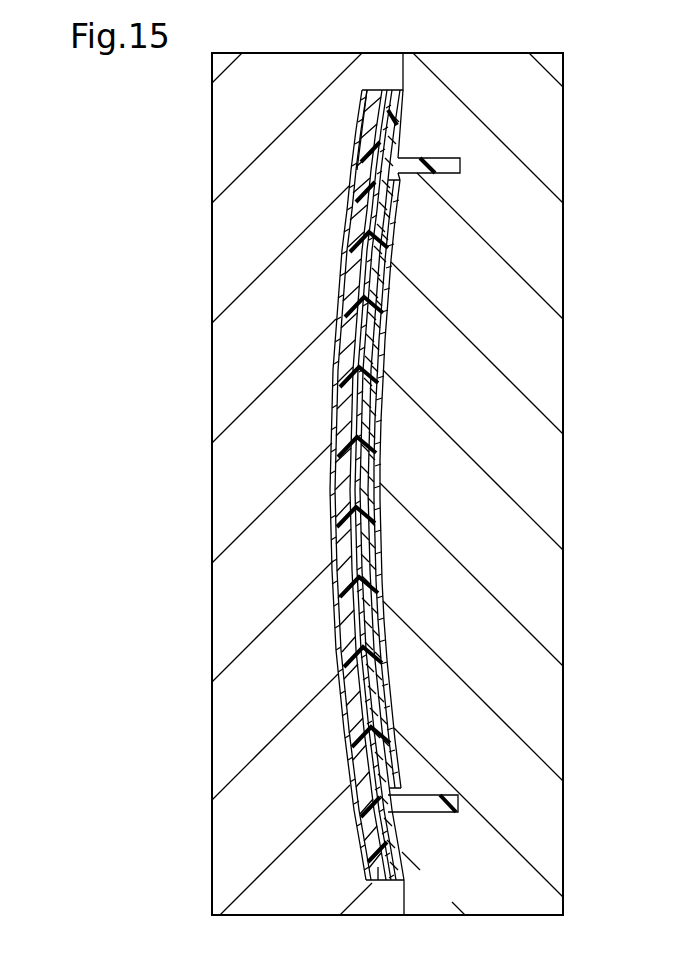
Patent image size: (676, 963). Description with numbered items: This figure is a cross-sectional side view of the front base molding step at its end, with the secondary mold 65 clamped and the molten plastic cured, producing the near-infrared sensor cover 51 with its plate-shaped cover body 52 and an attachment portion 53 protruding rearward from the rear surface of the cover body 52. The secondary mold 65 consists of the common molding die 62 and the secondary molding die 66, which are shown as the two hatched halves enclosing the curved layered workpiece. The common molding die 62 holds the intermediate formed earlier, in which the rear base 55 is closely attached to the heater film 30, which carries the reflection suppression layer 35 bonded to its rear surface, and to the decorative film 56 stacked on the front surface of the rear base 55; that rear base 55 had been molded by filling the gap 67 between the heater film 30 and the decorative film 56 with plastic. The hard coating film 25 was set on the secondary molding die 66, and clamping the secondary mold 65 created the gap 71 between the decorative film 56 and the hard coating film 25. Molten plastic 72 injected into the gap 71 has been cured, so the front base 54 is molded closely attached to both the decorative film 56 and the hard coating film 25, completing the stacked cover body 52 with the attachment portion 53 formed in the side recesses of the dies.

The hard coating film 25 is at (351, 207).
The heater film 30 is at (386, 274).
The reflection suppression layer 35 is at (385, 356).
The near-infrared sensor cover 51 is at (452, 830).
The cover body 52 is at (377, 868).
The attachment portion 53 is at (455, 165).
The front base 54 is at (327, 142).
The rear base 55 is at (360, 367).
The decorative film 56 is at (359, 263).
The common molding die 62 is at (527, 100).
The secondary mold 65 is at (625, 45).
The secondary molding die 66 is at (388, 72).
The gap (cavity) 67 is at (394, 180).
The gap (cavity) 71 is at (383, 92).
The molten plastic 72 is at (374, 131).